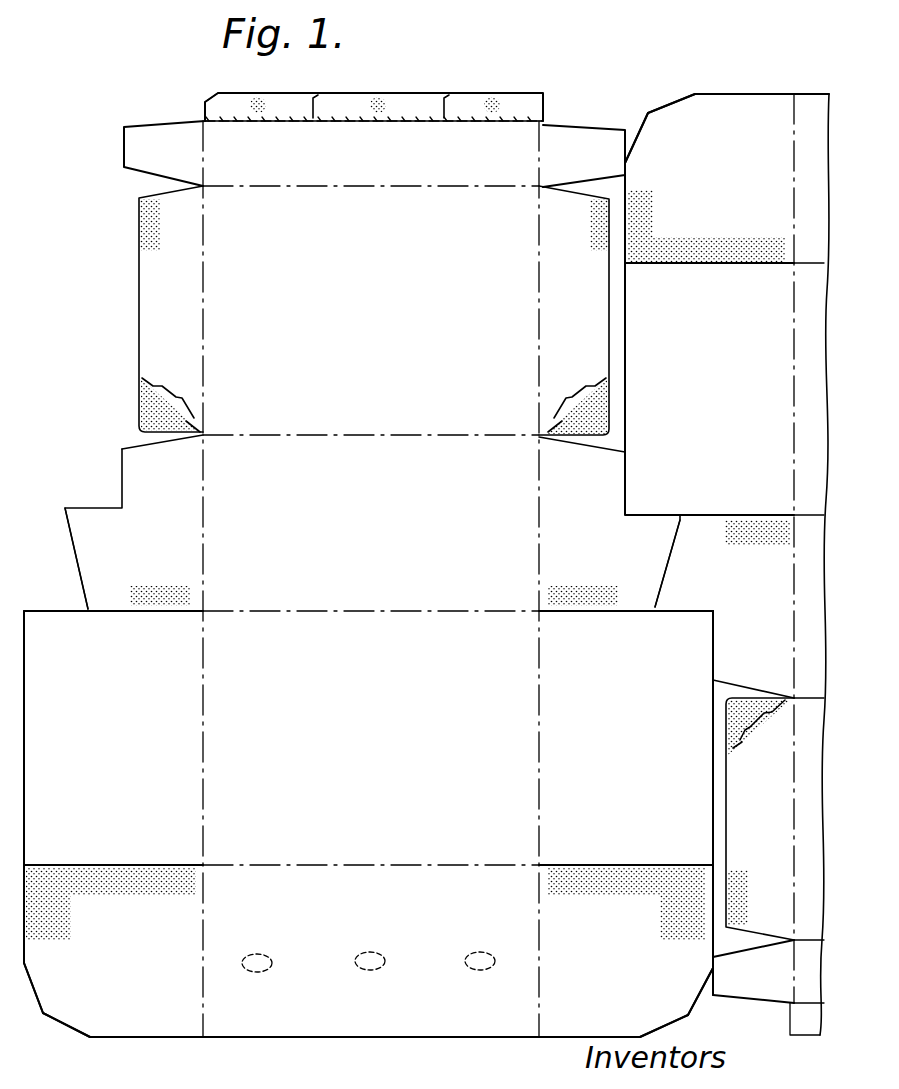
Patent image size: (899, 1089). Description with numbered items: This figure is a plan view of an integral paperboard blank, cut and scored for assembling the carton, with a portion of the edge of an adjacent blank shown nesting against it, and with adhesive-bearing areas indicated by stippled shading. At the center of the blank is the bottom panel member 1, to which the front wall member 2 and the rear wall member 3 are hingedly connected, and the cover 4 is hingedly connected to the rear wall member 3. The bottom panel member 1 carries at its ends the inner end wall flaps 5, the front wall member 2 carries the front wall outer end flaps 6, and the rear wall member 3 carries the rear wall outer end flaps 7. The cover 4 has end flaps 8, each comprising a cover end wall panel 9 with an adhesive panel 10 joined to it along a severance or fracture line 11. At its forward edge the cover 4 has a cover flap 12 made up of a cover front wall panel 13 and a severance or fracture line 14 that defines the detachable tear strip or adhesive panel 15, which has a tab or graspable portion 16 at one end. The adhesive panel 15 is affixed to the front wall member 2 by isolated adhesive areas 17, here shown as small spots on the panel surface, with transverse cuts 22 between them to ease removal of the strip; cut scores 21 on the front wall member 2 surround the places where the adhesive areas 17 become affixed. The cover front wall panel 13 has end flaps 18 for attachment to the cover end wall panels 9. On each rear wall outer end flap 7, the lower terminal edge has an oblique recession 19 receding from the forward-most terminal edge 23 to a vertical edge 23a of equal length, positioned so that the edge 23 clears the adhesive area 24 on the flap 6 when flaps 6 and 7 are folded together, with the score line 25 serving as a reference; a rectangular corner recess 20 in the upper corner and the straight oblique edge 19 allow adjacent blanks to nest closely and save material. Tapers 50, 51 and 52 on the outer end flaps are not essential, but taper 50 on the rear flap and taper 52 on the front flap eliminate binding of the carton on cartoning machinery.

The bottom panel member 1 is at (509, 604).
The front wall member 2 is at (510, 599).
The rear wall member 3 is at (509, 523).
The cover 4 is at (506, 506).
The inner end wall flaps 5 is at (409, 514).
The front wall outer end flaps 6 is at (427, 530).
The rear wall outer end flaps 7 is at (427, 534).
The end flaps 8 is at (136, 291).
The cover end wall panels 9 is at (466, 563).
The adhesive panels 10 is at (148, 404).
The severance or fracture lines 11 is at (168, 392).
The cover flap 12 is at (230, 137).
The cover front wall panel 13 is at (512, 554).
The severance or fracture line 14 is at (345, 123).
The detachable tear strip or adhesive panel 15 is at (414, 92).
The tab or graspable portion 16 is at (207, 100).
The isolated adhesive areas 17 is at (256, 100).
The end flaps 18 is at (459, 562).
The oblique recession 19 is at (74, 553).
The rectangular corner recess 20 is at (109, 491).
The cut scores 21 is at (257, 954).
The transverse cuts 22 is at (316, 97).
The forward-most terminal edge 23 is at (66, 516).
The vertical edge 23a is at (84, 600).
The adhesive area 24 is at (60, 915).
The score line 25 is at (269, 609).
The taper 50 is at (148, 448).
The taper 51 is at (640, 137).
The taper 52 is at (668, 103).